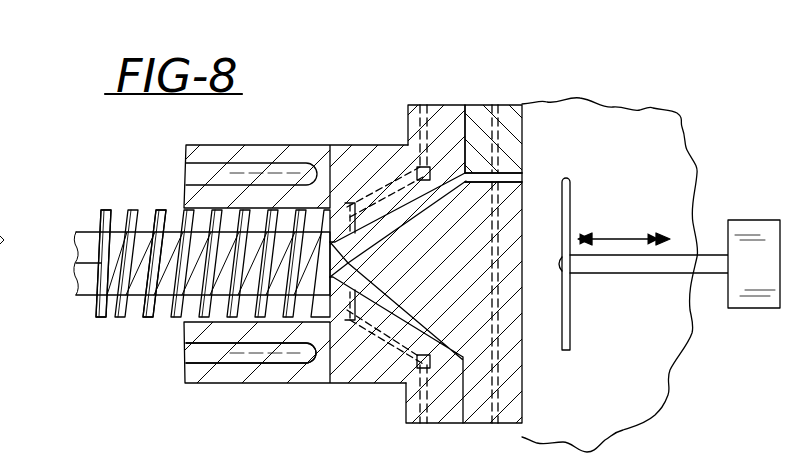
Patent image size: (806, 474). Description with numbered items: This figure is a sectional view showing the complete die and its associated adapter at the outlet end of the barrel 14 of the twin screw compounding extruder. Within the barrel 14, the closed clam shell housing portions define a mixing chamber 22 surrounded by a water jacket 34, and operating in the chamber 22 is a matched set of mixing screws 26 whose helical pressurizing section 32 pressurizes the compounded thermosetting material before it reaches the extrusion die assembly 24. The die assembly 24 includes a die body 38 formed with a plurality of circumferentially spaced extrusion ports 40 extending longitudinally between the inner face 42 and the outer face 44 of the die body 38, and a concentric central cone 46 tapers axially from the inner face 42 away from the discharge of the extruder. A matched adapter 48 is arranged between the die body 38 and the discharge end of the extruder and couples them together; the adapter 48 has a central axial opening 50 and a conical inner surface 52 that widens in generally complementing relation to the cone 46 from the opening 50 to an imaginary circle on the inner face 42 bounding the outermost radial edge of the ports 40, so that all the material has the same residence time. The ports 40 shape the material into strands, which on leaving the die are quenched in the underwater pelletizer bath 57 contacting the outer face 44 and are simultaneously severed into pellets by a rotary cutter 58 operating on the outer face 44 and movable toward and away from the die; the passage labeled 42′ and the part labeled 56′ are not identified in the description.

The barrel 14 is at (252, 144).
The mixing chamber 22 is at (196, 217).
The extrusion die assembly 24 is at (470, 100).
The mixing screws 26 is at (101, 316).
The helical pressurizing section 32 is at (145, 322).
The water jacket 34 is at (233, 353).
The die body 38 is at (513, 104).
The extrusion ports 40 is at (523, 177).
The inner face 42 is at (420, 104).
The passage 42′ is at (452, 419).
The outer face 44 is at (522, 133).
The central cone 46 is at (400, 225).
The adapter 48 is at (340, 144).
The central axial opening 50 is at (329, 266).
The conical inner surface 52 is at (368, 293).
The mold part 56′ is at (606, 469).
The underwater pelletizer bath 57 is at (650, 115).
The rotary cutter 58 is at (573, 210).